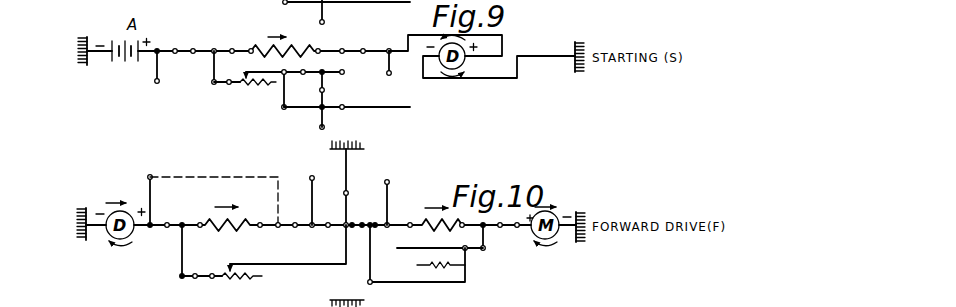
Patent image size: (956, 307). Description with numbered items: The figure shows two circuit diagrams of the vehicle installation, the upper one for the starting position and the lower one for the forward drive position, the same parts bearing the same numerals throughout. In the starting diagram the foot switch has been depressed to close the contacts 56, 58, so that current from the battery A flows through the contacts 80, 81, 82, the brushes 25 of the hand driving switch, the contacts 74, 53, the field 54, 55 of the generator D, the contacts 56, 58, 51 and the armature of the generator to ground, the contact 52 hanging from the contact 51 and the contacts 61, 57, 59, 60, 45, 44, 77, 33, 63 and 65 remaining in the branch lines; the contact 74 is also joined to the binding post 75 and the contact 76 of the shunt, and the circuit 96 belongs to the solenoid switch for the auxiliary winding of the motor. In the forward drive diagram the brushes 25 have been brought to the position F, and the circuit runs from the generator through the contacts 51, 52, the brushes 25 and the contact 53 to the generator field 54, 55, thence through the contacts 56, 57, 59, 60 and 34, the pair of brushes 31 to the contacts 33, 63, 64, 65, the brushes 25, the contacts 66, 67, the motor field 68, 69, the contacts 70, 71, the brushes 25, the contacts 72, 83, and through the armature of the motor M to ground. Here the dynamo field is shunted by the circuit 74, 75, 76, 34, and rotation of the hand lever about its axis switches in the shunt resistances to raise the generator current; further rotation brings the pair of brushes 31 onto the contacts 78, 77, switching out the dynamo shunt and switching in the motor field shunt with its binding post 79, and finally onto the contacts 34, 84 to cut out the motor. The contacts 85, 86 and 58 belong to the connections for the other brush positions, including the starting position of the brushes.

In FIG. 10, the brushes 25 is at (377, 223).
In FIG. 10, the brush 31 is at (205, 264).
In FIG. 9, the contact 33 is at (283, 3).
In FIG. 10, the contact 33 is at (295, 244).
In FIG. 10, the contact 34 is at (349, 214).
In FIG. 9, the contact 44 is at (318, 101).
In FIG. 9, the contact 45 is at (331, 90).
In FIG. 9, the contact 51 is at (391, 44).
In FIG. 10, the contact 51 is at (151, 233).
In FIG. 9, the contact 52 is at (389, 71).
In FIG. 10, the contact 52 is at (167, 217).
In FIG. 9, the contact 53 is at (232, 44).
In FIG. 10, the contact 53 is at (185, 242).
In FIG. 9, the generator field 54 is at (249, 44).
In FIG. 10, the generator field 54 is at (202, 217).
In FIG. 9, the generator field 55 is at (319, 44).
In FIG. 10, the generator field 55 is at (262, 217).
In FIG. 9, the contact 56 is at (344, 44).
In FIG. 10, the contact 56 is at (280, 233).
In FIG. 9, the contact 57 is at (350, 72).
In FIG. 10, the contact 57 is at (296, 217).
In FIG. 9, the contact 58 is at (367, 44).
In FIG. 10, the contact 58 is at (210, 192).
In FIG. 9, the contact 59 is at (325, 92).
In FIG. 10, the contact 59 is at (311, 233).
In FIG. 9, the binding post contact 60 is at (306, 65).
In FIG. 10, the binding post contact 60 is at (330, 217).
In FIG. 9, the contact 61 is at (285, 65).
In FIG. 9, the binding post contact 63 is at (297, 58).
In FIG. 10, the binding post contact 63 is at (350, 228).
In FIG. 10, the binding post contact 64 is at (371, 217).
In FIG. 9, the contact 65 is at (333, 75).
In FIG. 10, the contact 65 is at (378, 253).
In FIG. 10, the contact 66 is at (387, 223).
In FIG. 10, the contact 67 is at (388, 234).
In FIG. 10, the motor field 68 is at (412, 217).
In FIG. 10, the motor field 69 is at (464, 217).
In FIG. 10, the contact 70 is at (481, 228).
In FIG. 10, the contact 71 is at (487, 229).
In FIG. 10, the contact 72 is at (500, 217).
In FIG. 9, the contact 74 is at (214, 58).
In FIG. 10, the contact 74 is at (197, 284).
In FIG. 9, the binding post contact 75 is at (222, 90).
In FIG. 10, the binding post contact 75 is at (195, 284).
In FIG. 9, the contact 76 is at (248, 90).
In FIG. 10, the contact 76 is at (234, 283).
In FIG. 9, the contact 77 is at (348, 99).
In FIG. 10, the contact 77 is at (368, 289).
In FIG. 10, the contact 78 is at (421, 264).
In FIG. 10, the binding post contact 79 is at (447, 255).
In FIG. 9, the contact 80 is at (156, 44).
In FIG. 9, the binding post contact 81 is at (176, 44).
In FIG. 9, the contact 82 is at (194, 44).
In FIG. 10, the contact 83 is at (518, 217).
In FIG. 10, the contact 84 is at (355, 187).
In FIG. 10, the contact 85 is at (312, 193).
In FIG. 10, the contact 86 is at (389, 195).
In FIG. 9, the solenoid switch circuit 96 is at (156, 75).